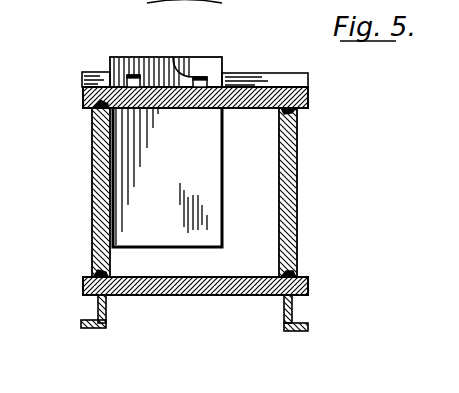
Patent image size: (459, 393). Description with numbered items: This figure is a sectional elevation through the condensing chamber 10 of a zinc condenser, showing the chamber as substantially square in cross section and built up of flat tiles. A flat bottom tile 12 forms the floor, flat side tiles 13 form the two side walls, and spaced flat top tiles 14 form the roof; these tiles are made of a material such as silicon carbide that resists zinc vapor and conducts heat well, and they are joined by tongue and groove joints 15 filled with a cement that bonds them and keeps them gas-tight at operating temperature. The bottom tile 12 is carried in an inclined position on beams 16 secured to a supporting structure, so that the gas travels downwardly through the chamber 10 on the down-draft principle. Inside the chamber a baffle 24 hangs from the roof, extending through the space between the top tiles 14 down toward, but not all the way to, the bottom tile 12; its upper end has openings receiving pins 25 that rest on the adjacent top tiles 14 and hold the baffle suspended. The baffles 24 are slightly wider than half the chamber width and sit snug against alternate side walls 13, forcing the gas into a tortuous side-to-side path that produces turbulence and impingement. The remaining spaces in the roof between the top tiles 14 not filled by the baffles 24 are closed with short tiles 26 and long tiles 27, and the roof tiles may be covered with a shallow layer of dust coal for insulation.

The condensing chamber 10 is at (248, 179).
The flat bottom tile 12 is at (225, 295).
The flat side tiles 13 is at (93, 193).
The flat top tiles 14 is at (302, 100).
The tongue and groove joints 15 is at (93, 118).
The beams 16 is at (108, 308).
The baffles 24 is at (123, 215).
The pins 25 is at (136, 76).
The short tiles 26 is at (90, 71).
The long tiles 27 is at (253, 77).